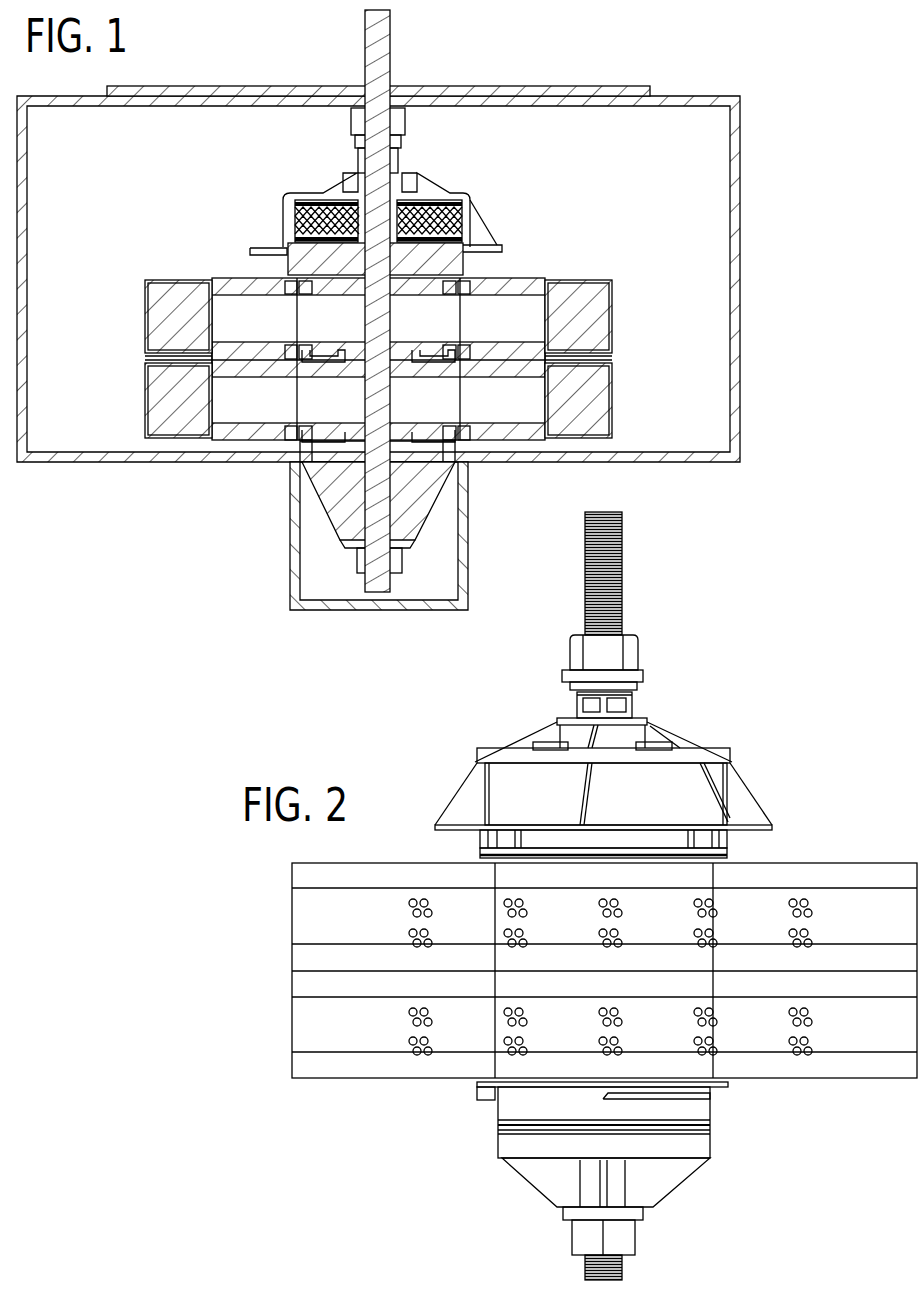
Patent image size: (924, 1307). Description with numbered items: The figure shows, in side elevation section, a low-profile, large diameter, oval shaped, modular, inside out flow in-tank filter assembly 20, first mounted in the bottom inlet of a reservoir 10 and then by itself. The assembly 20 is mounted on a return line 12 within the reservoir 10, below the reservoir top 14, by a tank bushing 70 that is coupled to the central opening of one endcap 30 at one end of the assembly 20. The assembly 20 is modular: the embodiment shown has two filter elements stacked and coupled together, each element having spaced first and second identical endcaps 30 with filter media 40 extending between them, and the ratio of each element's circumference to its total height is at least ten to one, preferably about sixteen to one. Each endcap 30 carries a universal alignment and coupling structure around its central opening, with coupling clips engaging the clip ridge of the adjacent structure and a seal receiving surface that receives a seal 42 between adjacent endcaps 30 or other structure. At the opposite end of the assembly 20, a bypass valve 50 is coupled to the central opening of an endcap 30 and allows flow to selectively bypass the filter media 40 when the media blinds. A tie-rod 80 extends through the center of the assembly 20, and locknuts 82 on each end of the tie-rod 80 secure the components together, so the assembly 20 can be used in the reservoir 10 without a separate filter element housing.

In FIG. 1, the reservoir 10 is at (741, 337).
In FIG. 1, the return line 12 is at (468, 594).
In FIG. 1, the top 14 is at (576, 86).
In FIG. 1, the inside out flow in-tank filter assembly 20 is at (360, 333).
In FIG. 2, the inside out flow in-tank filter assembly 20 is at (568, 896).
In FIG. 1, the endcap 30 is at (265, 303).
In FIG. 2, the endcap 30 is at (820, 865).
In FIG. 1, the filter media 40 is at (149, 320).
In FIG. 2, the filter media 40 is at (298, 920).
In FIG. 1, the seal 42 is at (466, 266).
In FIG. 1, the bypass valve 50 is at (477, 217).
In FIG. 2, the bypass valve 50 is at (735, 764).
In FIG. 1, the tank bushing 70 is at (428, 523).
In FIG. 2, the tank bushing 70 is at (710, 1152).
In FIG. 1, the tie-rod 80 is at (363, 56).
In FIG. 2, the tie-rod 80 is at (623, 588).
In FIG. 1, the locknut 82 is at (406, 121).
In FIG. 2, the locknut 82 is at (639, 652).